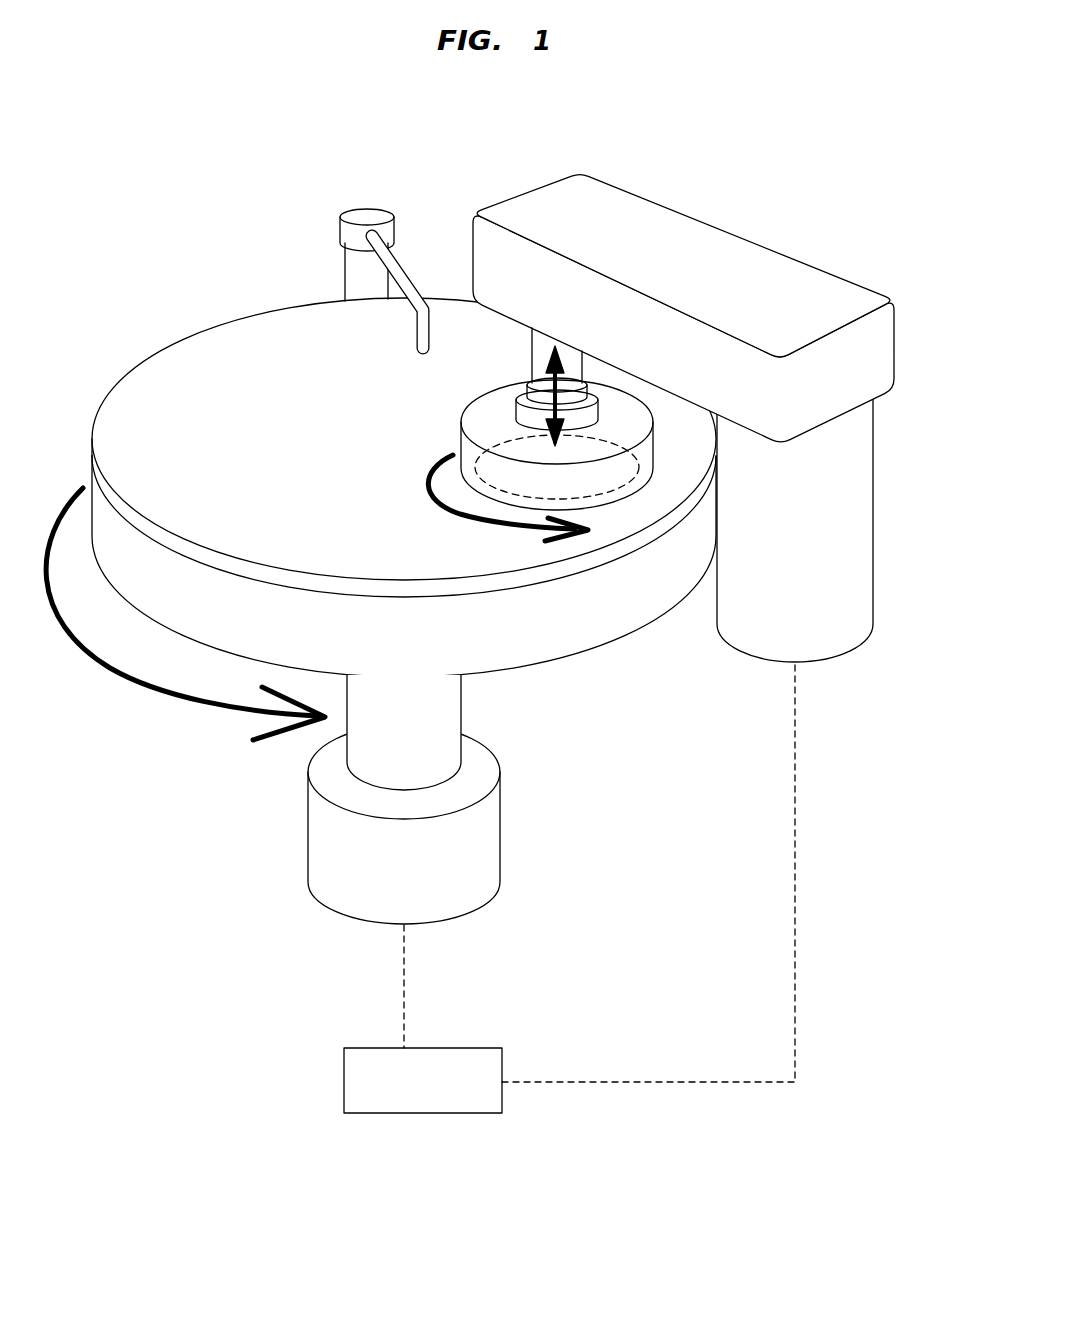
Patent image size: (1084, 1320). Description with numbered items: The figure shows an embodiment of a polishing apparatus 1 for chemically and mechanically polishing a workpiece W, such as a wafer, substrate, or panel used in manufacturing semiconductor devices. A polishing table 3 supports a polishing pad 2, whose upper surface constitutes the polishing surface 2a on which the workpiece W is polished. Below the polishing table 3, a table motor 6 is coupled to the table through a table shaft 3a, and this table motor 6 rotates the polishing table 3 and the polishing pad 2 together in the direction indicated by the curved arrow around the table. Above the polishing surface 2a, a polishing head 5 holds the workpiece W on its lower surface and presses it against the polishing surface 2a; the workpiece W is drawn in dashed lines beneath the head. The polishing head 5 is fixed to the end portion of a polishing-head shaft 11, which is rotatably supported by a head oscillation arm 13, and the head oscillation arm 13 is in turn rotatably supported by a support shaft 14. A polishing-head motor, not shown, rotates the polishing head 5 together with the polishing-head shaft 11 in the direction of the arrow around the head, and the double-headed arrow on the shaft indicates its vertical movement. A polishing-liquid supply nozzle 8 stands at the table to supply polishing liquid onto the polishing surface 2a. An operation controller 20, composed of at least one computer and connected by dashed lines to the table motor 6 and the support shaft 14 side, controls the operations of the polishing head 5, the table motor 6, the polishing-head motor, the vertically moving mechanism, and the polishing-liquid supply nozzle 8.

The polishing apparatus 1 is at (503, 657).
The polishing pad 2 is at (154, 400).
The polishing surface 2a is at (257, 495).
The polishing table 3 is at (572, 630).
The table shaft 3a is at (461, 713).
The polishing head 5 is at (468, 402).
The table motor 6 is at (308, 842).
The polishing-liquid supply nozzle 8 is at (367, 212).
The polishing-head shaft 11 is at (532, 350).
The head oscillation arm 13 is at (727, 228).
The support shaft 14 is at (873, 482).
The operation controller 20 is at (418, 1113).
The workpiece W is at (612, 488).